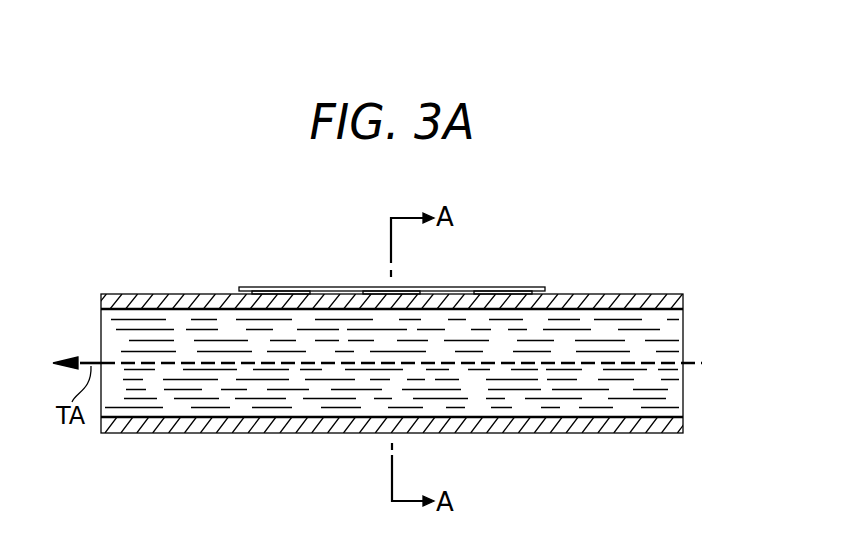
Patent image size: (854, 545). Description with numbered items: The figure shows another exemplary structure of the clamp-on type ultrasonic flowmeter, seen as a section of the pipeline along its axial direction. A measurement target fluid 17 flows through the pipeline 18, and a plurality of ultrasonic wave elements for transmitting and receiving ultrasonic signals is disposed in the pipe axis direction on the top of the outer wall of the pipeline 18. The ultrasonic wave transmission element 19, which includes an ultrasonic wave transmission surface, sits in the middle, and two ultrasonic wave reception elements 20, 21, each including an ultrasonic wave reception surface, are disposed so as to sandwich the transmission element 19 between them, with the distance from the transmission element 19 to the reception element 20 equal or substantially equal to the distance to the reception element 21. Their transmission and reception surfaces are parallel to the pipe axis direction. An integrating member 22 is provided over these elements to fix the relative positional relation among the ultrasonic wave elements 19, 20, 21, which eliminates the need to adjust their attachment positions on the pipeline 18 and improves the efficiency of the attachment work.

The measurement target fluid 17 is at (665, 388).
The pipeline 18 is at (651, 294).
The ultrasonic wave transmission element 19 is at (366, 291).
The ultrasonic wave reception element 20 is at (284, 291).
The ultrasonic wave reception element 21 is at (497, 291).
The integrating member 22 is at (540, 287).